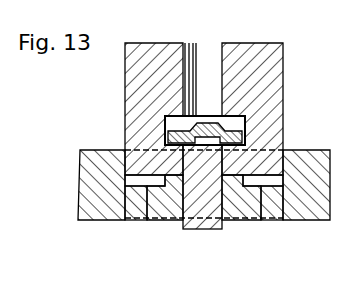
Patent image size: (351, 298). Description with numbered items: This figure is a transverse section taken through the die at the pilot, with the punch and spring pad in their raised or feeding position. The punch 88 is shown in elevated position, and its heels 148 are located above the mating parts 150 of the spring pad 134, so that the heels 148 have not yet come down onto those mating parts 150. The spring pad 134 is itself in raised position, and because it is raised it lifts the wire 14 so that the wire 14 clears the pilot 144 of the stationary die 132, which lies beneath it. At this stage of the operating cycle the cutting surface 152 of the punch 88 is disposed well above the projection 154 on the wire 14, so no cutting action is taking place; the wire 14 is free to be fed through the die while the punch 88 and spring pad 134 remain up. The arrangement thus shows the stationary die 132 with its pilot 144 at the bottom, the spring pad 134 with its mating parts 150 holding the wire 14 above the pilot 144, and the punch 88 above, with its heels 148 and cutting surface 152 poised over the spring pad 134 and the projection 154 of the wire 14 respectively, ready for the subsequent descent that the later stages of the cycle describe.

The wire 14 is at (222, 118).
The punch 88 is at (283, 43).
The stationary die 132 is at (205, 229).
The spring pad 134 is at (166, 222).
The pilot 144 is at (283, 122).
The heels 148 is at (160, 145).
The mating parts 150 is at (145, 222).
The cutting surface 152 is at (165, 116).
The projection 154 is at (200, 112).